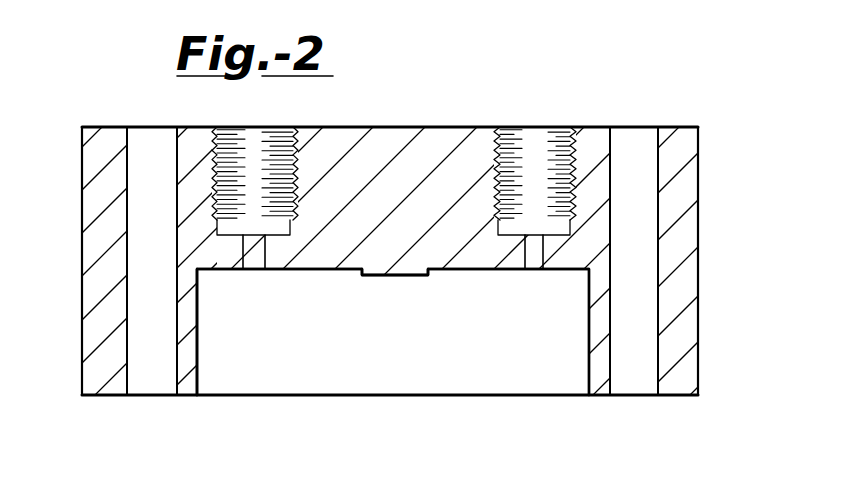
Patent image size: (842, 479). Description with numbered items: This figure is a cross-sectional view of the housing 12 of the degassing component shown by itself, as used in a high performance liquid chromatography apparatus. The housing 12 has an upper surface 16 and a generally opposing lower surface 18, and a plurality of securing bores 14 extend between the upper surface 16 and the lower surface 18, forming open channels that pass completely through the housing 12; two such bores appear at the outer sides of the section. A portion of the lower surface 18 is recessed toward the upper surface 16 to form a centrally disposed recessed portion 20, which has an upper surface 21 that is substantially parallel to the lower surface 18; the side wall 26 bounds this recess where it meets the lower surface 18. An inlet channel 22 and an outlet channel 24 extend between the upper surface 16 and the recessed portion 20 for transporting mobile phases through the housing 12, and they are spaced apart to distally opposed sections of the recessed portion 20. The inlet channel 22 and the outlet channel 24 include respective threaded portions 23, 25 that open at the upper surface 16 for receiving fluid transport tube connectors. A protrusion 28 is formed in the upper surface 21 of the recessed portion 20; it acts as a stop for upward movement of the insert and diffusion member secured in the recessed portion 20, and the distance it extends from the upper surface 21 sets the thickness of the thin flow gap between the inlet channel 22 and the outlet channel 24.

The housing 12 is at (708, 121).
The securing bores 14 is at (142, 128).
The upper surface 16 is at (385, 128).
The lower surface 18 is at (113, 380).
The recessed portion 20 is at (493, 278).
The upper surface of recessed portion 21 is at (305, 271).
The inlet channel 22 is at (233, 269).
The threaded portion 23 is at (294, 176).
The outlet channel 24 is at (543, 260).
The threaded portion 25 is at (498, 166).
The side wall of recess 26 is at (197, 369).
The protrusion 28 is at (377, 276).